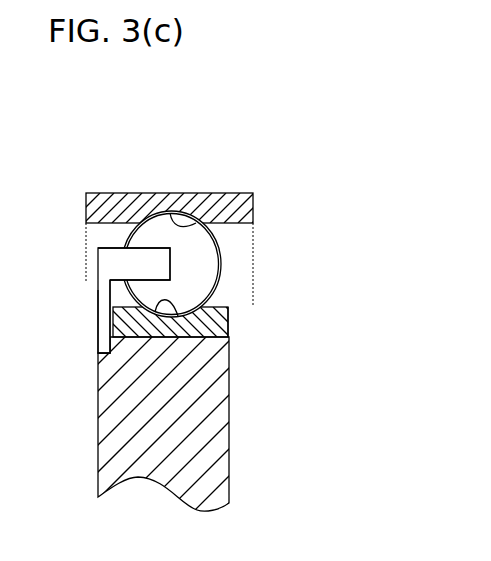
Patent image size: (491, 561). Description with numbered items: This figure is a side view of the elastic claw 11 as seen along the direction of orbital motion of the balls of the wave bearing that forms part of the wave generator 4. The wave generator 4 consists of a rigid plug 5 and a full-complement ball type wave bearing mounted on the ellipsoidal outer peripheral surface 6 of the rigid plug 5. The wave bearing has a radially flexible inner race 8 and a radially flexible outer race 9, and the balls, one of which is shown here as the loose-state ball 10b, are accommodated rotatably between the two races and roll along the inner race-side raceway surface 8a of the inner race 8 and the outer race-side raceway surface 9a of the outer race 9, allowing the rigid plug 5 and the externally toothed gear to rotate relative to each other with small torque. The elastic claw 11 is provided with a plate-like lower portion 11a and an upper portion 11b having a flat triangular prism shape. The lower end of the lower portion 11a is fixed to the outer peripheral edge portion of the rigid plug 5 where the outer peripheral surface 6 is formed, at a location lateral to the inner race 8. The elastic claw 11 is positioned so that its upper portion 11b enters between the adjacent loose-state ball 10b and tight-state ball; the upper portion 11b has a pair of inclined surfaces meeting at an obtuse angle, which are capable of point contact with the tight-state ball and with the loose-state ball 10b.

The wave generator 4 is at (179, 257).
The rigid plug 5 is at (235, 440).
The outer peripheral surface 6 is at (228, 313).
The inner race 8 is at (228, 306).
The inner race-side raceway surface 8a is at (192, 316).
The outer race 9 is at (254, 213).
The outer race-side raceway surface 9a is at (200, 207).
The loose-state ball 10b is at (222, 262).
The elastic claw 11 is at (87, 289).
The lower portion 11a is at (98, 342).
The upper portion 11b is at (140, 255).